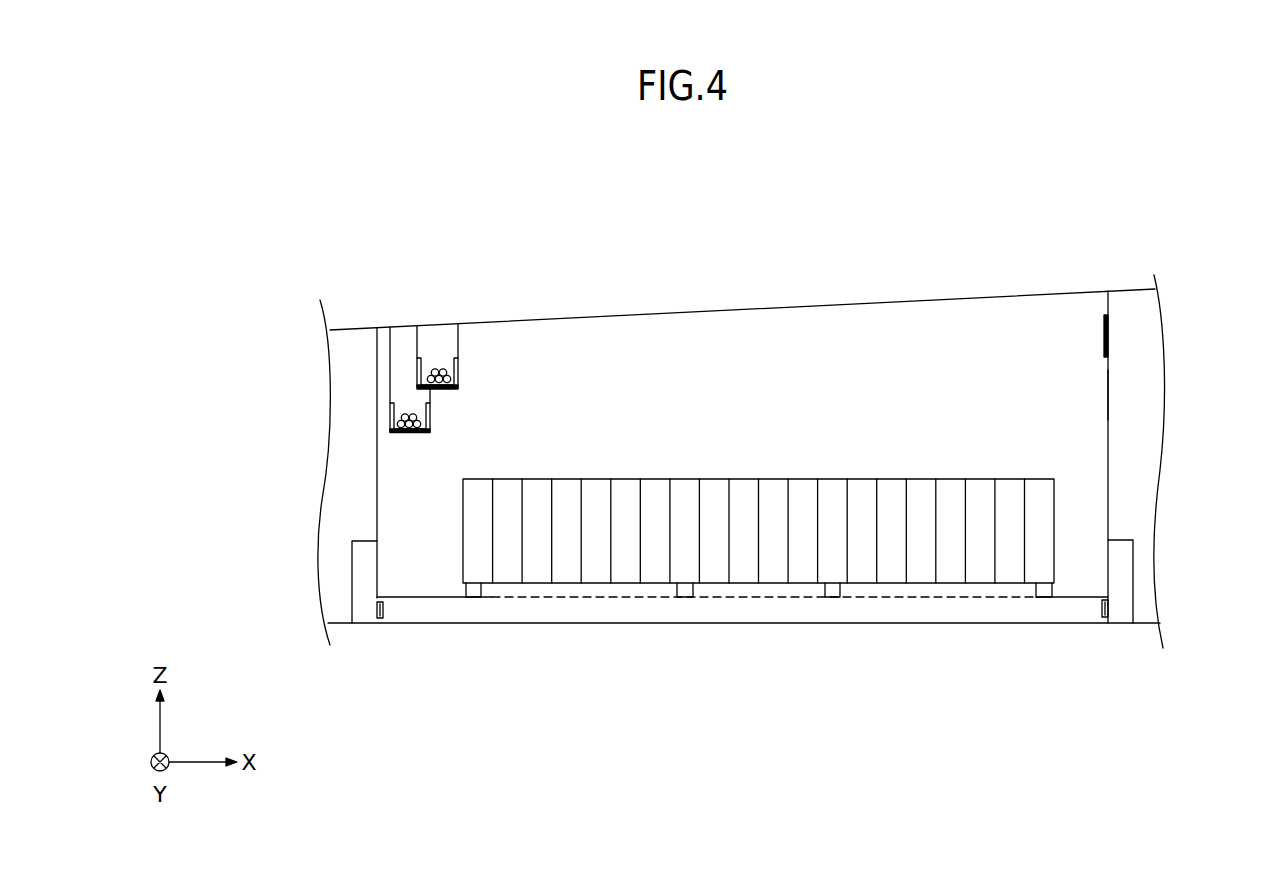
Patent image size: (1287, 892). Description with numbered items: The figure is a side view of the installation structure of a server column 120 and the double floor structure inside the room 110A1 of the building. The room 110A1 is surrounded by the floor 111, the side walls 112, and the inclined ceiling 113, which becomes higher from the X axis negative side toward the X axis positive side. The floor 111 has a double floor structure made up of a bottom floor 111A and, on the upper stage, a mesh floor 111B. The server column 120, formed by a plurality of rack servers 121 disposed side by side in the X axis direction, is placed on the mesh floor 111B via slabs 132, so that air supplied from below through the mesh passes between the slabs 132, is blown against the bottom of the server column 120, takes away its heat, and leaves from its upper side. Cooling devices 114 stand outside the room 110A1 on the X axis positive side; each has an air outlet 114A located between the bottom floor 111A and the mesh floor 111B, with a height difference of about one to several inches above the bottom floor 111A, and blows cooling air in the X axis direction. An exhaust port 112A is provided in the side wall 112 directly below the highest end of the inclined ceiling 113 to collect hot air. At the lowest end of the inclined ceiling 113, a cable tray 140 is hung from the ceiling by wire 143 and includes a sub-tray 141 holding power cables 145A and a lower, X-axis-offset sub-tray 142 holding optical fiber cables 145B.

The room 110A1 is at (1067, 405).
The floor 111 is at (744, 665).
The bottom floor 111A is at (408, 686).
The mesh floor 111B is at (430, 598).
The side wall 112 is at (378, 455).
The exhaust port 112A is at (1105, 340).
The inclined ceiling 113 is at (850, 306).
The cooling device 114 is at (363, 541).
The air outlet 114A is at (385, 613).
The server column 120 is at (763, 539).
The rack server 121 is at (928, 484).
The slab 132 is at (1042, 588).
The cable tray 140 is at (419, 378).
The sub-tray 141 is at (486, 357).
The sub-tray 142 is at (388, 396).
The wire 143 is at (391, 364).
The power cable 145A is at (434, 369).
The optical fiber cable 145B is at (407, 413).